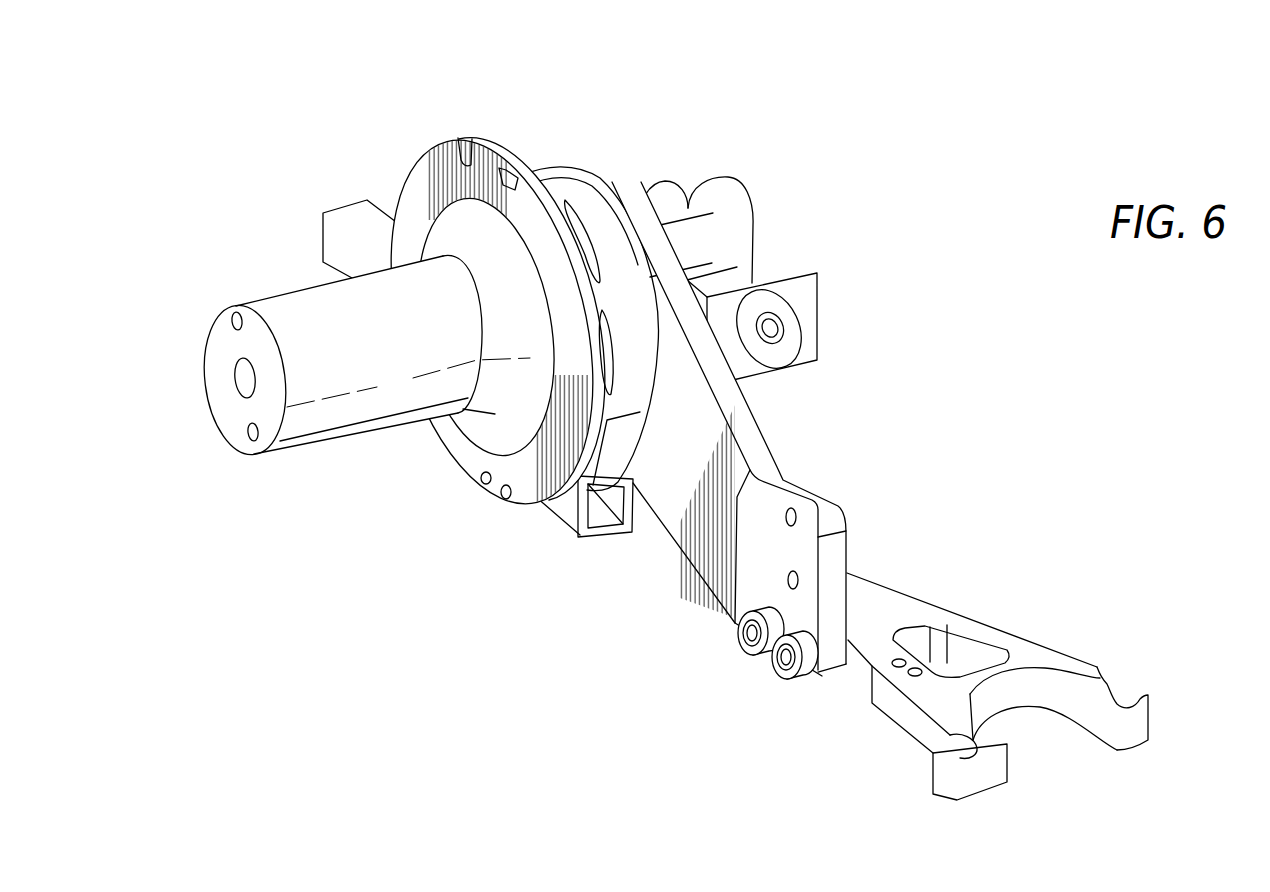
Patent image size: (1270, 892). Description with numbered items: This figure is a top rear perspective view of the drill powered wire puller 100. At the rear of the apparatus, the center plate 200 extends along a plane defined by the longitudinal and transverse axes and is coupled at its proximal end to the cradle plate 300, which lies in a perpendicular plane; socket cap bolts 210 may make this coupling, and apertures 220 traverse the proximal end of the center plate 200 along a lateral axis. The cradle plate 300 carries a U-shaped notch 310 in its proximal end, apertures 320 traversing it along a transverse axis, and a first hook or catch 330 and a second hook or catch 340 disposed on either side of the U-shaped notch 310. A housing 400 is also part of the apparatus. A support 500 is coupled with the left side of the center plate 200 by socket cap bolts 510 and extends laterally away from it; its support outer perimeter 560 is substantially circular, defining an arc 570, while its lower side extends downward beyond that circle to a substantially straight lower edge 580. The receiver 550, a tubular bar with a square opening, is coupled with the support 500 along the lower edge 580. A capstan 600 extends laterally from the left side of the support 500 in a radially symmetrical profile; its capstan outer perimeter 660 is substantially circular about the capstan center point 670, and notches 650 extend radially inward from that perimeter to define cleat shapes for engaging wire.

The drill powered wire puller 100 is at (183, 139).
The center plate 200 is at (805, 497).
The socket cap bolts 210 is at (755, 657).
The apertures 220 is at (788, 518).
The cradle plate 300 is at (1030, 655).
The U-shaped notch 310 is at (1003, 698).
The apertures 320 is at (917, 672).
The first hook or catch 330 is at (1122, 702).
The second hook or catch 340 is at (948, 777).
The housing 400 is at (775, 254).
The support 500 is at (592, 202).
The socket cap bolts 510 is at (583, 253).
The receiver 550 is at (327, 245).
The support outer perimeter 560 is at (627, 267).
The arc 570 is at (635, 378).
The lower edge 580 is at (623, 487).
The capstan 600 is at (290, 300).
The notches 650 is at (468, 136).
The capstan outer perimeter 660 is at (547, 502).
The capstan center point 670 is at (248, 382).